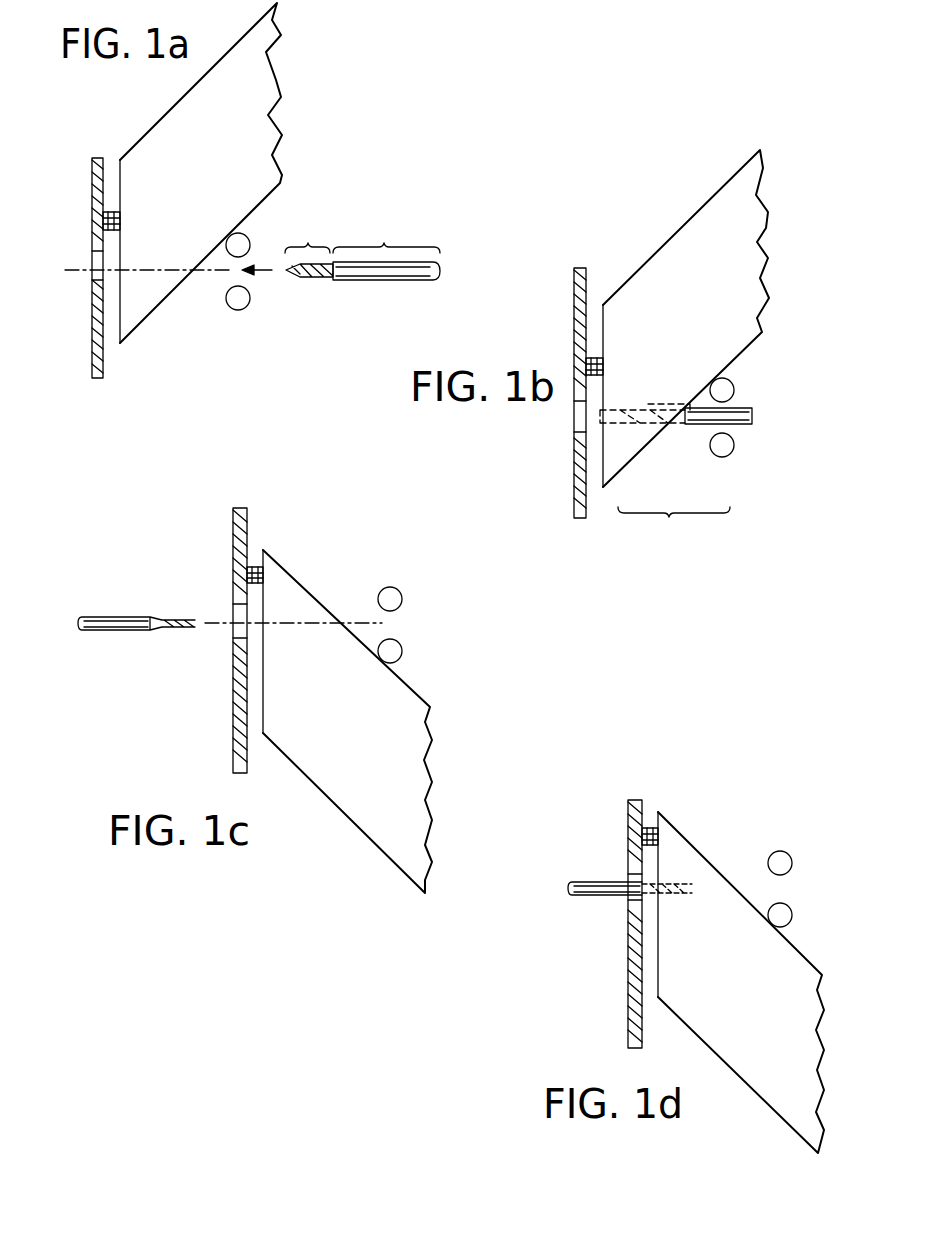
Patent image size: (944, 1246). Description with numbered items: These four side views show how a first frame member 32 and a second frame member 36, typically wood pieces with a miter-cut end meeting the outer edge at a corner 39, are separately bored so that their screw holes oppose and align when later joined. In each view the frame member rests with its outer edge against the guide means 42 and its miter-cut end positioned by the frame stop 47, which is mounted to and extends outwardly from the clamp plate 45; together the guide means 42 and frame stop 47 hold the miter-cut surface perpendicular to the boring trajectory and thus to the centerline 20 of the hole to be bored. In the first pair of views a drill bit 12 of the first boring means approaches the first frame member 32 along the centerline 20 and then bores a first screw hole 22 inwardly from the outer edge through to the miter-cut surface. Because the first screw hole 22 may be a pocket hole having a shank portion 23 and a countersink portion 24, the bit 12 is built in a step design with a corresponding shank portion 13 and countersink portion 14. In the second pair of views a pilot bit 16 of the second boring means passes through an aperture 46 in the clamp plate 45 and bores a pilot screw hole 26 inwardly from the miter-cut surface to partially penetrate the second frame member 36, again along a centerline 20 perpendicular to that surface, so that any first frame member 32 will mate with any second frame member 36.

In FIG. 1A, the bit 12 is at (398, 278).
In FIG. 1A, the shank portion 13 is at (307, 234).
In FIG. 1A, the countersink portion 14 is at (386, 234).
In FIG. 1C, the bit 16 is at (125, 631).
In FIG. 1D, the bit 16 is at (580, 892).
In FIG. 1A, the centerline 20 is at (170, 266).
In FIG. 1C, the centerline 20 is at (312, 627).
In FIG. 1B, the first screw hole 22 is at (676, 474).
In FIG. 1B, the shank portion 23 is at (622, 424).
In FIG. 1B, the countersink portion 24 is at (650, 428).
In FIG. 1D, the pilot screw hole 26 is at (680, 898).
In FIG. 1A, the first frame member 32 is at (282, 97).
In FIG. 1B, the first frame member 32 is at (765, 228).
In FIG. 1C, the second frame member 36 is at (357, 818).
In FIG. 1D, the second frame member 36 is at (805, 965).
In FIG. 1A, the corner 39 is at (120, 345).
In FIG. 1B, the corner 39 is at (603, 490).
In FIG. 1C, the corner 39 is at (265, 548).
In FIG. 1D, the corner 39 is at (660, 812).
In FIG. 1A, the guide means 42 is at (236, 248).
In FIG. 1B, the guide means 42 is at (733, 446).
In FIG. 1C, the guide means 42 is at (398, 605).
In FIG. 1D, the guide means 42 is at (790, 912).
In FIG. 1A, the clamp plate 45 is at (92, 353).
In FIG. 1B, the clamp plate 45 is at (578, 456).
In FIG. 1C, the clamp plate 45 is at (238, 542).
In FIG. 1D, the clamp plate 45 is at (637, 800).
In FIG. 1C, the aperture 46 is at (237, 628).
In FIG. 1D, the aperture 46 is at (625, 900).
In FIG. 1A, the frame stop 47 is at (110, 212).
In FIG. 1B, the frame stop 47 is at (595, 358).
In FIG. 1C, the frame stop 47 is at (253, 565).
In FIG. 1D, the frame stop 47 is at (653, 826).